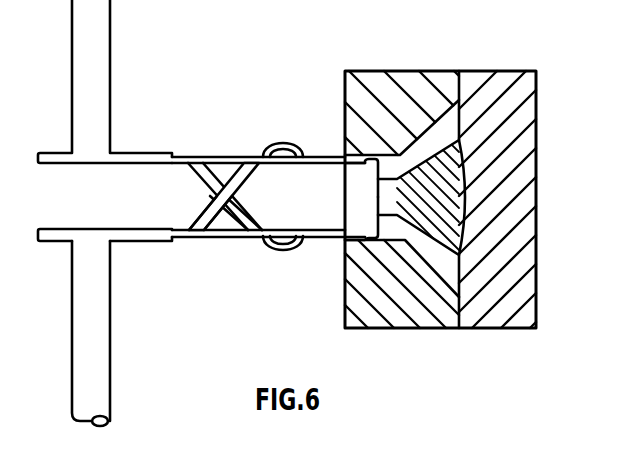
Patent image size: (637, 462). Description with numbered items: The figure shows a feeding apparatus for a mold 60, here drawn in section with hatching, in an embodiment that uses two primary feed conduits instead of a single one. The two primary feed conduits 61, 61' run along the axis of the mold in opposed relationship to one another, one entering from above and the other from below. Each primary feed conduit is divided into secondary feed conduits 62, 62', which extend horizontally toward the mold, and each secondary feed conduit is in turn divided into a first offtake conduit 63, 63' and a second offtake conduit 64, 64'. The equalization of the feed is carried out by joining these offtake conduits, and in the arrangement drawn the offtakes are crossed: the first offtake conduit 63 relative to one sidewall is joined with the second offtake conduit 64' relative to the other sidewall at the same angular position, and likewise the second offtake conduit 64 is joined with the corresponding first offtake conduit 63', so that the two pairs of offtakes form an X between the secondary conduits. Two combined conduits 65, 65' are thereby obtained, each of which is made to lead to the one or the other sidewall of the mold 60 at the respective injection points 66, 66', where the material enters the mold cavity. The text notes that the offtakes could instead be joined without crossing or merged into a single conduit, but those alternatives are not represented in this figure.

The mold 60 is at (428, 71).
The primary feed conduit 61 is at (105, 81).
The primary feed conduit 61' is at (105, 327).
The secondary feed conduit 62 is at (259, 125).
The secondary feed conduit 62' is at (246, 255).
The first offtake conduit 63 is at (225, 159).
The first offtake conduit 63' is at (226, 238).
The second offtake conduit 64 is at (234, 159).
The second offtake conduit 64' is at (226, 238).
The combined conduit 65 is at (297, 122).
The combined conduit 65' is at (298, 258).
The injection point 66 is at (377, 113).
The injection point 66' is at (394, 285).